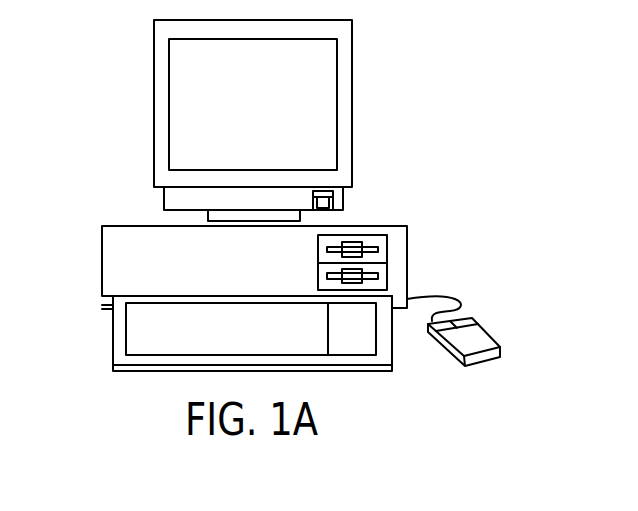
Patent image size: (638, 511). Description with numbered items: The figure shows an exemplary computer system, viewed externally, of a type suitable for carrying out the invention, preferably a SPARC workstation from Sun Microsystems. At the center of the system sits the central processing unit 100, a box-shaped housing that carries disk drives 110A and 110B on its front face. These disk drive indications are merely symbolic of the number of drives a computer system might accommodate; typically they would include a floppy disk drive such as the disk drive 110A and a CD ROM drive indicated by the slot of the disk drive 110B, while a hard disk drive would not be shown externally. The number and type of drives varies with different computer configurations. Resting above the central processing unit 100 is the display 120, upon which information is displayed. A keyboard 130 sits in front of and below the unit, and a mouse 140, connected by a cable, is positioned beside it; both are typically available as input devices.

The central processing unit 100 is at (102, 258).
The disk drive 110A is at (318, 245).
The disk drive 110B is at (318, 272).
The display 120 is at (353, 101).
The keyboard 130 is at (113, 339).
The mouse 140 is at (483, 326).